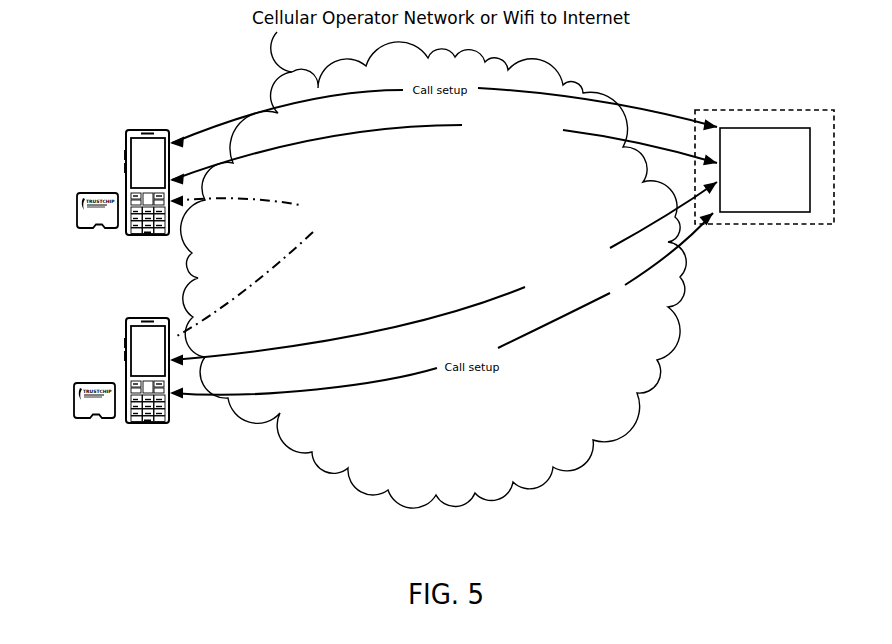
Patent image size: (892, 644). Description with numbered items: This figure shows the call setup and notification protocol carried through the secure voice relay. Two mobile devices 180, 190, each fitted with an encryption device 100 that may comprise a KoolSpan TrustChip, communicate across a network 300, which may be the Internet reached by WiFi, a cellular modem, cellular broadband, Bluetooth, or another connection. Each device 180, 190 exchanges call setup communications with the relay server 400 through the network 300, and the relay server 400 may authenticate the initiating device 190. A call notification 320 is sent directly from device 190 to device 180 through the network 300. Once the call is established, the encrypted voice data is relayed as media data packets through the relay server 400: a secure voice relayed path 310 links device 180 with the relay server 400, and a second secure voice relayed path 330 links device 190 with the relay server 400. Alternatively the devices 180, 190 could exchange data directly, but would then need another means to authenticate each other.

The encryption device 100 is at (96, 305).
The device 180 is at (147, 182).
The device 190 is at (147, 370).
The network 300 is at (434, 270).
The secure voice relayed path (first phone) 310 is at (443, 149).
The call notification 320 is at (258, 266).
The secure voice relayed path (second phone) 330 is at (443, 274).
The relay server 400 is at (764, 167).